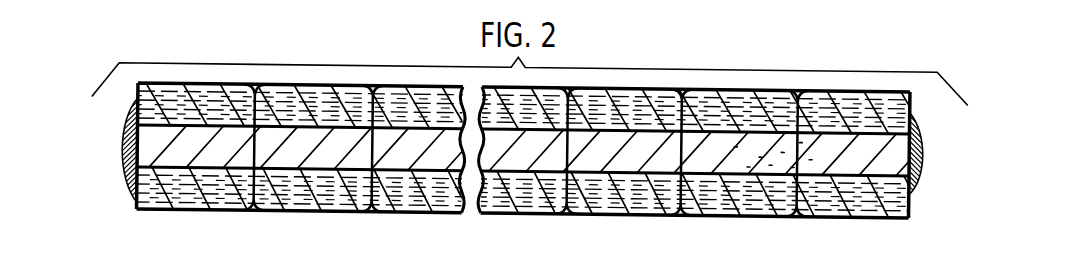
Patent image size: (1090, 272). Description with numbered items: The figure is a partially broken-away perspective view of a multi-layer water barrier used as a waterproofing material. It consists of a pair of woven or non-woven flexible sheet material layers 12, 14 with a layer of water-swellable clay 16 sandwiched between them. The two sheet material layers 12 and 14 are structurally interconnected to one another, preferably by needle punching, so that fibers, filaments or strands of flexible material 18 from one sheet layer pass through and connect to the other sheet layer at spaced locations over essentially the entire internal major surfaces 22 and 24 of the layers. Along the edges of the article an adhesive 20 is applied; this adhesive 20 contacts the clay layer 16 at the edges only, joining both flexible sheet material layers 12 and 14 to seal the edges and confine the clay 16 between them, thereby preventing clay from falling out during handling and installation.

The flexible sheet material layer 12 is at (645, 110).
The flexible sheet material layer 14 is at (593, 216).
The water-swellable clay layer 16 is at (663, 216).
The fibers, filaments or strands of flexible material 18 is at (267, 215).
The adhesive 20 is at (125, 150).
The internal major surface 22 is at (764, 140).
The internal major surface 24 is at (775, 163).